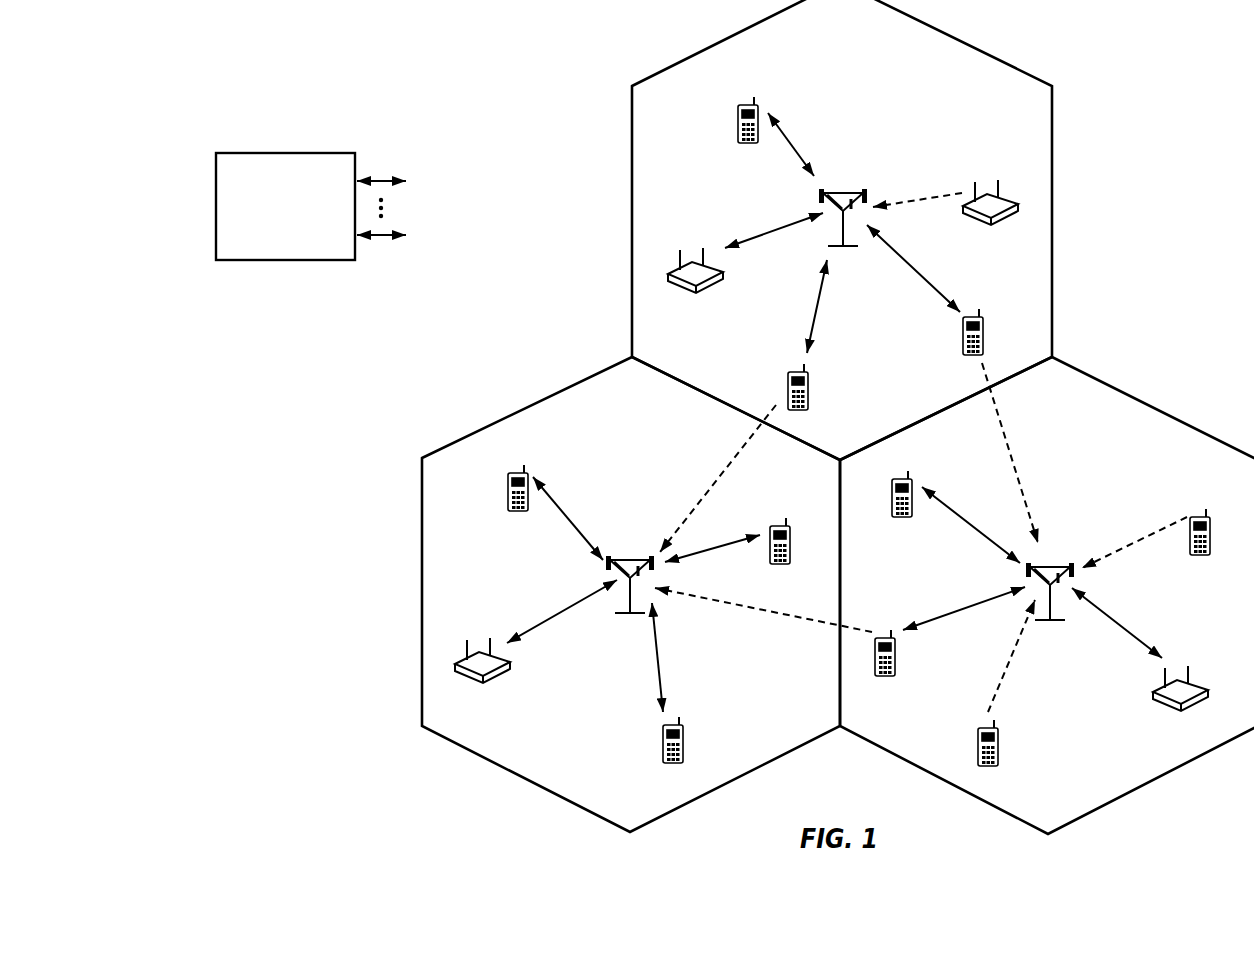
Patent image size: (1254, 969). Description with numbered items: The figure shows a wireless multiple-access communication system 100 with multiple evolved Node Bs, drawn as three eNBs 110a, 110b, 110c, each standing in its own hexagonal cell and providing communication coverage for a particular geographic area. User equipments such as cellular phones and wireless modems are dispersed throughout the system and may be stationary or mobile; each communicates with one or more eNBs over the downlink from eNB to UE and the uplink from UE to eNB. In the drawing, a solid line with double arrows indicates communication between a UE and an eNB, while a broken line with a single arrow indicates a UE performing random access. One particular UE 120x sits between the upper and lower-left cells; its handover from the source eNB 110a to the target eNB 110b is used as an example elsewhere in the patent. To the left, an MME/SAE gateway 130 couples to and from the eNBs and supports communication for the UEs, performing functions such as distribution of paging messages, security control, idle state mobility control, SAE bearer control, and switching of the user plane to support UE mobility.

The wireless multiple-access communication system 100 is at (1204, 48).
The evolved Node B (eNB) 110a is at (843, 190).
The evolved Node B (eNB) 110b is at (630, 557).
The evolved Node B (eNB) 110c is at (1050, 564).
The user equipment (UE) 120x is at (788, 384).
The MME/SAE gateway 130 is at (283, 153).